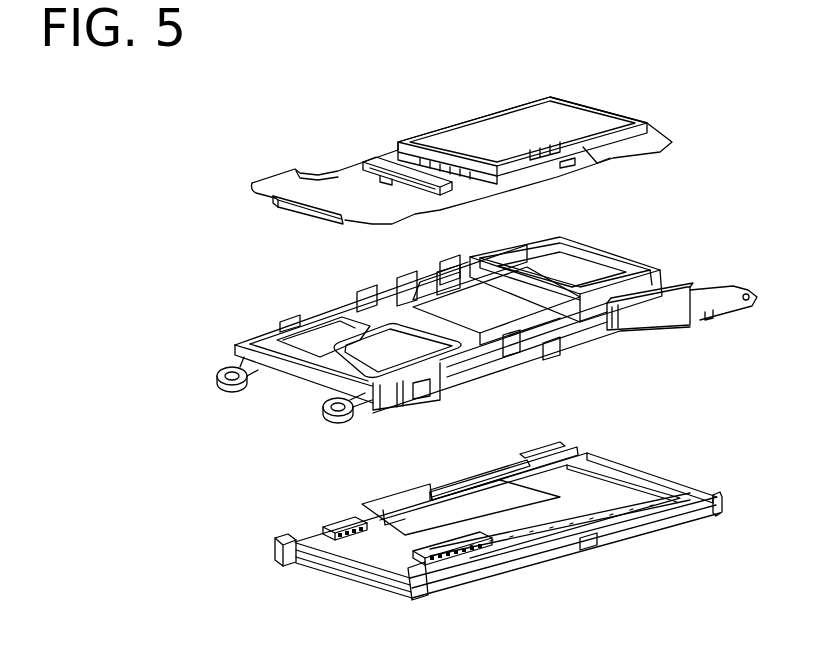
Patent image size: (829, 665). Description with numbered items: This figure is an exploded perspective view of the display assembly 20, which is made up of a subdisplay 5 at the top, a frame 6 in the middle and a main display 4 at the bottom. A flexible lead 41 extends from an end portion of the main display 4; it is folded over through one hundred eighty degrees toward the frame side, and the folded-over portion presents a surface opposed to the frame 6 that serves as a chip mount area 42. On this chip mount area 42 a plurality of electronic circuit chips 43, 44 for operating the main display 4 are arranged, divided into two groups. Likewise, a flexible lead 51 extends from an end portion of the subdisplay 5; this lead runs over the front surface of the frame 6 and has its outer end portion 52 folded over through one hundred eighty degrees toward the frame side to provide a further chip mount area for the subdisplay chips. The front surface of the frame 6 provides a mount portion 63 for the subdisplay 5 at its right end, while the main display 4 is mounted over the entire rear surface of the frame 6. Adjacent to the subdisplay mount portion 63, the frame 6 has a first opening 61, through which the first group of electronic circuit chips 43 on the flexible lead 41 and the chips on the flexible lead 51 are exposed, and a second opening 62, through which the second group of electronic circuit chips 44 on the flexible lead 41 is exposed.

The display assembly 20 is at (170, 325).
The subdisplay 5 is at (487, 130).
The flexible lead 51 is at (289, 185).
The outer end portion 52 is at (283, 208).
The frame 6 is at (513, 363).
The first opening 61 is at (420, 348).
The second opening 62 is at (317, 338).
The mount portion 63 is at (590, 248).
The main display 4 is at (600, 490).
The flexible lead 41 is at (340, 570).
The chip mount area 42 is at (433, 510).
The electronic circuit chips 43 is at (488, 560).
The electronic circuit chips 44 is at (337, 513).